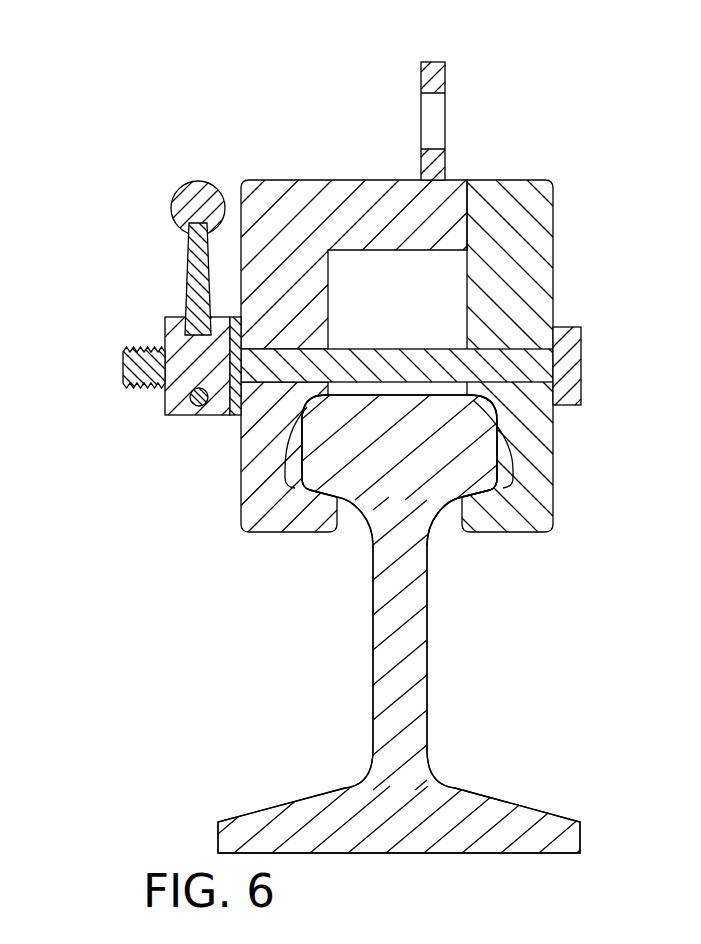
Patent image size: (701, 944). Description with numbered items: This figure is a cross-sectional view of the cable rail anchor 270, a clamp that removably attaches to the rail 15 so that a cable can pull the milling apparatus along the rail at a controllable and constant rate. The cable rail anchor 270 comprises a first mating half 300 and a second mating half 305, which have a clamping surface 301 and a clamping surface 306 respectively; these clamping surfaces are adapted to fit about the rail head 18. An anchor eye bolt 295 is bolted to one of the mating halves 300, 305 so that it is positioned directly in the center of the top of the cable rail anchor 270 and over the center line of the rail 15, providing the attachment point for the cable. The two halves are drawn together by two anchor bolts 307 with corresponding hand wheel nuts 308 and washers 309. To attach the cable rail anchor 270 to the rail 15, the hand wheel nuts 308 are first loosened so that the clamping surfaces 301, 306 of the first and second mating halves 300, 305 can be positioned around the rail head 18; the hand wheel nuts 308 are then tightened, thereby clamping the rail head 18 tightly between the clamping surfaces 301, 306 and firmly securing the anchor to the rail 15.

The rail 15 is at (372, 668).
The rail head 18 is at (453, 529).
The cable rail anchor 270 is at (500, 165).
The anchor eye bolt 295 is at (447, 82).
The first mating half 300 is at (291, 179).
The clamping surface 301 is at (287, 453).
The second mating half 305 is at (553, 247).
The clamping surface 306 is at (512, 470).
The anchor bolt 307 is at (582, 360).
The hand wheel nut 308 is at (162, 322).
The washer 309 is at (232, 417).